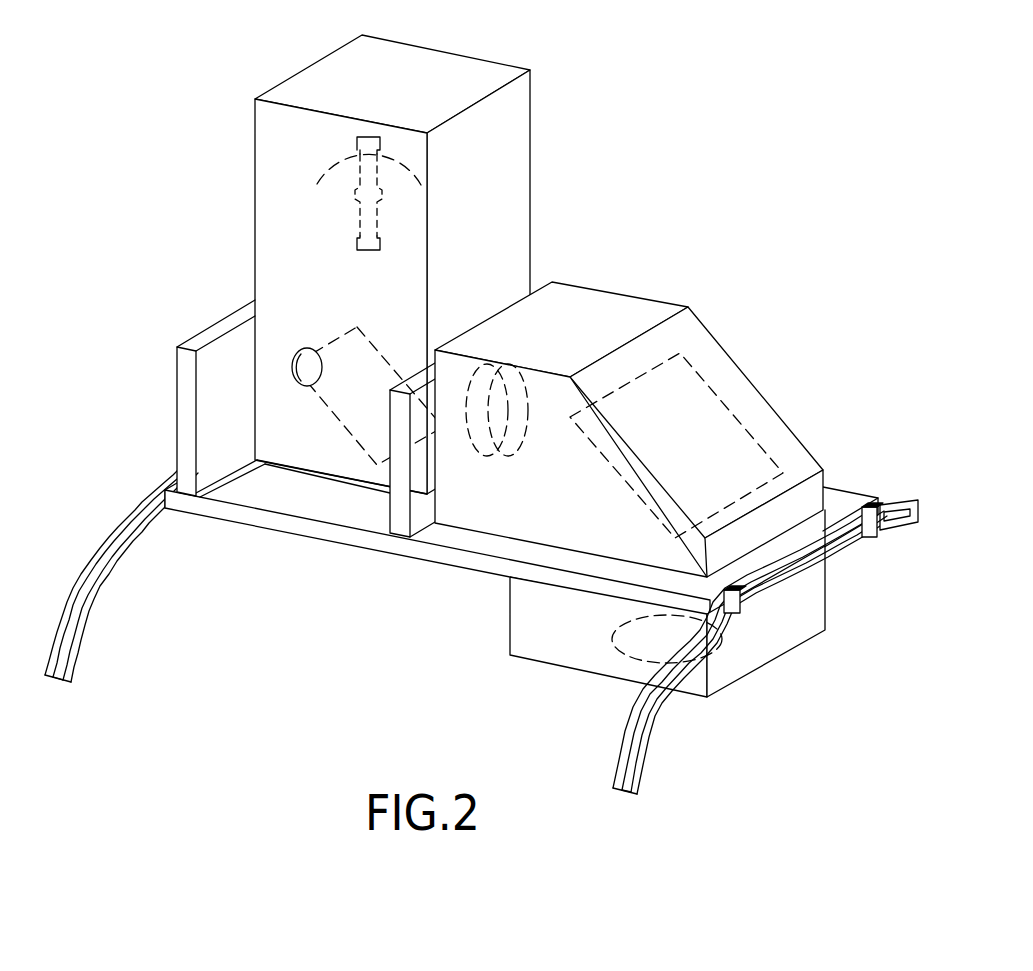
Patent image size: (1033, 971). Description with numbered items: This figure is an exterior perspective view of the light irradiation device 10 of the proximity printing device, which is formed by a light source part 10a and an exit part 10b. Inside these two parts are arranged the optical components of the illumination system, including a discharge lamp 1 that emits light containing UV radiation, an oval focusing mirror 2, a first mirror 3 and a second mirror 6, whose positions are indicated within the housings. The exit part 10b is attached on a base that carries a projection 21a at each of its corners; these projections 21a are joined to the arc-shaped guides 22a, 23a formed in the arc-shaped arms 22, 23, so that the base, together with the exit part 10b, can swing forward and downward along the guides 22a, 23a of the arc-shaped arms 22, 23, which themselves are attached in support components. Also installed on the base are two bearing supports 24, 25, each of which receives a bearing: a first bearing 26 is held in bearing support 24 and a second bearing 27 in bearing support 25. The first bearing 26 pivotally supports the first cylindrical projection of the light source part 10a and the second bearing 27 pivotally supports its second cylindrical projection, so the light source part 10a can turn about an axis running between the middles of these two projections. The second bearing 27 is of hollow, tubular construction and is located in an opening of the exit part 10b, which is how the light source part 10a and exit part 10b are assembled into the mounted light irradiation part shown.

The discharge lamp 1 is at (358, 192).
The oval focusing mirror 2 is at (340, 163).
The first mirror 3 is at (347, 332).
The second mirror 6 is at (678, 388).
The light irradiation device 10 is at (664, 203).
The light source part 10a is at (470, 57).
The exit part 10b is at (670, 300).
The projection 21a is at (732, 607).
The arc-shaped arm 22 is at (83, 630).
The guide 22a is at (115, 550).
The arc-shaped arm 23 is at (908, 496).
The guide 23a is at (782, 563).
The bearing support 24 is at (187, 485).
The bearing support 25 is at (398, 535).
The first bearing 26 is at (303, 350).
The second bearing 27 is at (495, 448).